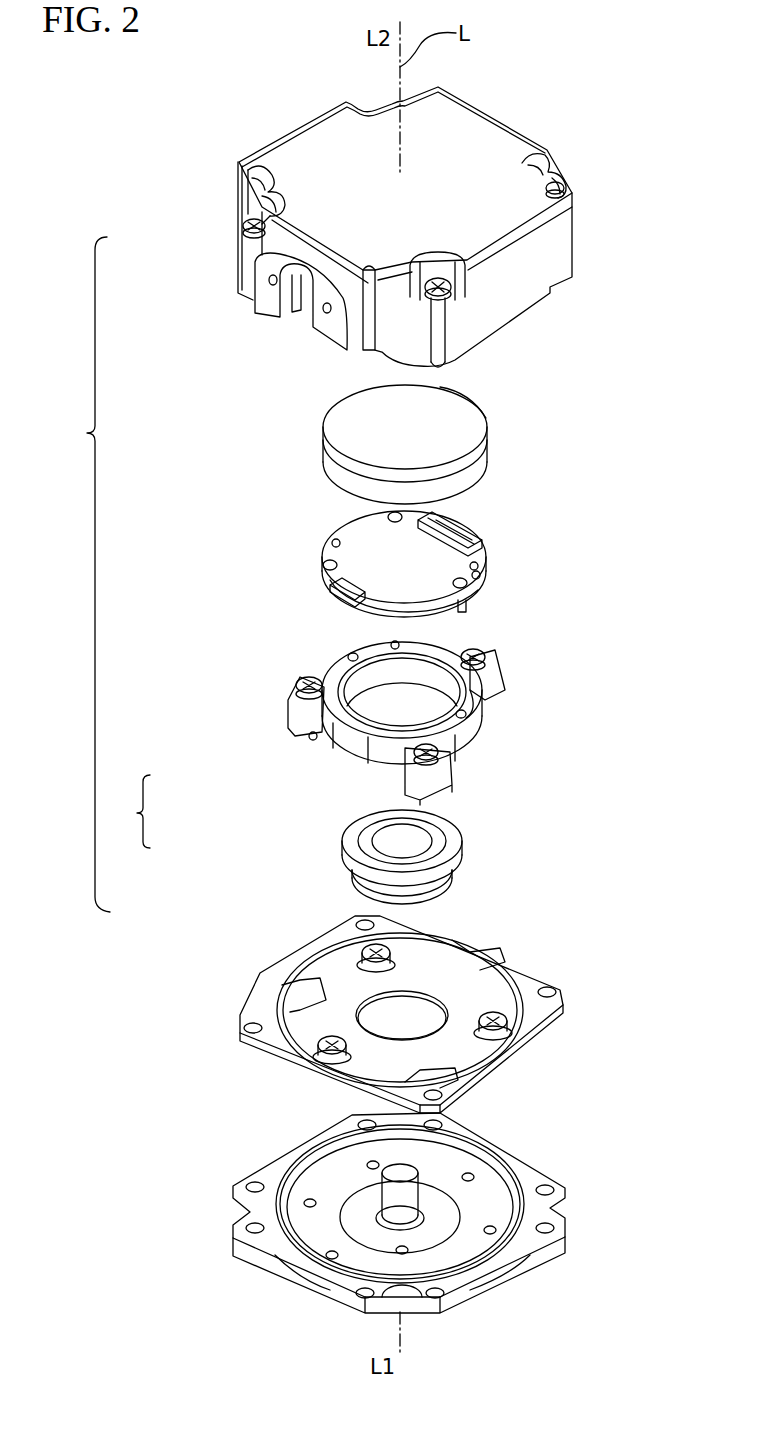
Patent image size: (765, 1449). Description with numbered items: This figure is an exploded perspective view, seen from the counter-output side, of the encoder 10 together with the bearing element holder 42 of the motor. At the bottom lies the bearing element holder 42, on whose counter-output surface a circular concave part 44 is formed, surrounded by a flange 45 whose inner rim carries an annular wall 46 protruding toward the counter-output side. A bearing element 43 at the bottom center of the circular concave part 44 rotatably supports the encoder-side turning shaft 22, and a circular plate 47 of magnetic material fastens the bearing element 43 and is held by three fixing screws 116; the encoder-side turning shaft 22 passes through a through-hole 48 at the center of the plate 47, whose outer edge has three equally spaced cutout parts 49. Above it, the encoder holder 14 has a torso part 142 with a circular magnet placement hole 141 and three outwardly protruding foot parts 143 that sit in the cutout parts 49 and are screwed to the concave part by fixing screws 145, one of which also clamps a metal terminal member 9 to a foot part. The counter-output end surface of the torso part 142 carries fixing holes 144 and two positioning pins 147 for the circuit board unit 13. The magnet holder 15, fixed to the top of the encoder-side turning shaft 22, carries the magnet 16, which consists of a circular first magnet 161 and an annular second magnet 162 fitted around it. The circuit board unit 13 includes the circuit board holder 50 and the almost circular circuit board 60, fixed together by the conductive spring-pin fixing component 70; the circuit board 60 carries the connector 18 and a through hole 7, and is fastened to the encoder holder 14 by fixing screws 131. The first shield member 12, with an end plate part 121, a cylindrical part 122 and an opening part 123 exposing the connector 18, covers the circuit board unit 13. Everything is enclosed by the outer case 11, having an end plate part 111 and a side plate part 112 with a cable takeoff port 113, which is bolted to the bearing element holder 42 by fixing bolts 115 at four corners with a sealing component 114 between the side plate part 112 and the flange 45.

The encoder 10 is at (84, 574).
The outer case 11 is at (381, 218).
The end plate part 111 is at (487, 132).
The side plate part 112 is at (565, 243).
The cable takeoff port 113 is at (290, 318).
The fixing bolts 115 is at (438, 268).
The first shield member 12 is at (335, 435).
The end plate part 121 is at (455, 437).
The cylindrical part 122 is at (482, 466).
The opening part 123 is at (455, 402).
The circuit board unit 13 is at (331, 561).
The fixing screws 131 is at (385, 513).
The connector 18 is at (458, 530).
The fixing component 70 is at (330, 542).
The through hole 7 is at (482, 568).
The circuit board holder 50 is at (345, 600).
The circuit board 60 is at (425, 590).
The encoder holder 14 is at (333, 713).
The magnet placement hole 141 is at (400, 672).
The torso part 142 is at (350, 742).
The foot parts 143 is at (492, 676).
The fixing holes 144 is at (390, 645).
The fixing screws 145 is at (298, 680).
The positioning pins 147 is at (348, 656).
The terminal member 9 is at (490, 707).
The magnet 16 is at (286, 830).
The first magnet 161 is at (385, 820).
The second magnet 162 is at (355, 850).
The magnet holder 15 is at (405, 898).
The sealing component 114 is at (397, 1013).
The fixing screws 116 is at (362, 945).
The cutout parts 49 is at (498, 988).
The plate 47 is at (522, 980).
The through-hole 48 is at (405, 995).
The bearing element holder 42 is at (371, 1218).
The annular wall 46 is at (290, 1158).
The bearing element 43 is at (375, 1235).
The circular concave part 44 is at (470, 1240).
The flange 45 is at (540, 1245).
The encoder-side turning shaft 22 is at (410, 1197).